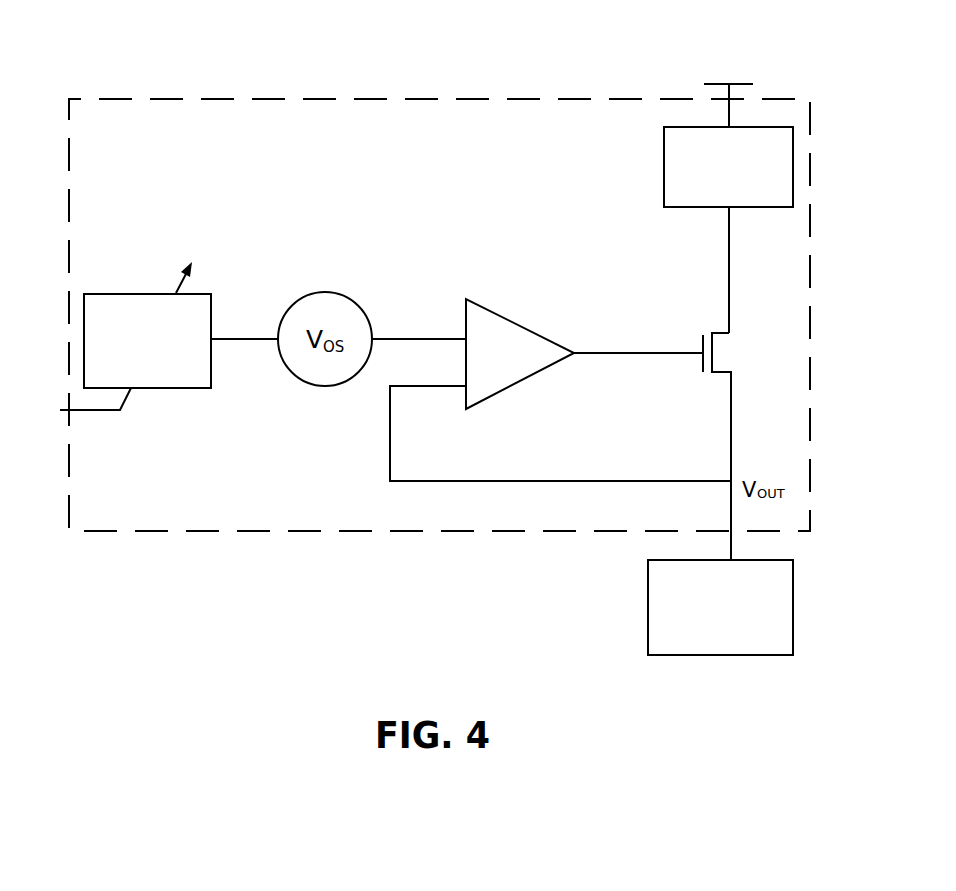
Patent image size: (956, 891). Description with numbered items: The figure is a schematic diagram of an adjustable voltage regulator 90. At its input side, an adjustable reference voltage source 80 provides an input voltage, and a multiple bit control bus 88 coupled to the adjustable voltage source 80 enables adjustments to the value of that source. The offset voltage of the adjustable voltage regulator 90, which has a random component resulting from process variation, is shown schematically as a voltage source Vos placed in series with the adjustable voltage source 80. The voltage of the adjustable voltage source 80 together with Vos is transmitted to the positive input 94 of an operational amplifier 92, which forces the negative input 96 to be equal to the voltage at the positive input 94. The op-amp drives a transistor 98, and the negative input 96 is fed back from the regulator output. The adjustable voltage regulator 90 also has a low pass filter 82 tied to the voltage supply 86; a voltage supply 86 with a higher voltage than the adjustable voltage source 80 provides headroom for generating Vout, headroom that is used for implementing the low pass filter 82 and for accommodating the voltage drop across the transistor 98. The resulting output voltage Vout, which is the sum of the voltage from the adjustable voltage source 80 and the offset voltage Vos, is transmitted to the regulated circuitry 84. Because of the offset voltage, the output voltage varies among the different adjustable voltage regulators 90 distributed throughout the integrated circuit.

The adjustable voltage regulator 90 is at (409, 88).
The voltage supply 86 is at (728, 93).
The low pass filter 82 is at (718, 200).
The transistor 98 is at (728, 344).
The operational amplifier 92 is at (511, 321).
The positive input 94 is at (464, 321).
The negative input 96 is at (462, 398).
The adjustable reference voltage source 80 is at (134, 378).
The multiple bit control bus 88 is at (103, 412).
The regulated circuitry 84 is at (709, 644).